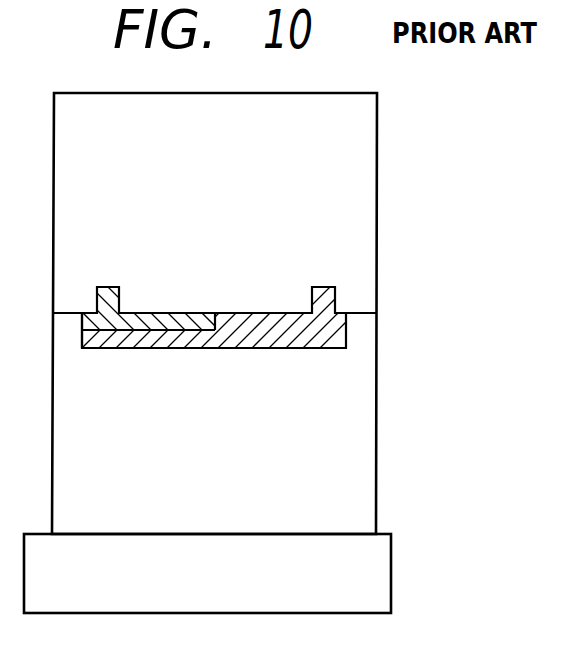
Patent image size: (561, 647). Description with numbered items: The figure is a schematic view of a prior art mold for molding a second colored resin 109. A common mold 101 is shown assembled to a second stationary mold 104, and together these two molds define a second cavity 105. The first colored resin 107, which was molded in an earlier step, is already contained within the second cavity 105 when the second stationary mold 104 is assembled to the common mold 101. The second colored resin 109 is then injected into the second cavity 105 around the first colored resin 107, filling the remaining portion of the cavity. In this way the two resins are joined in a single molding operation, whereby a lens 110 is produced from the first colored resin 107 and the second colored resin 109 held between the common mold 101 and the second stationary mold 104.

The common mold 101 is at (357, 151).
The second stationary mold 104 is at (355, 509).
The second cavity 105 is at (243, 339).
The first colored resin 107 is at (148, 313).
The second colored resin 109 is at (258, 313).
The lens 110 is at (102, 349).